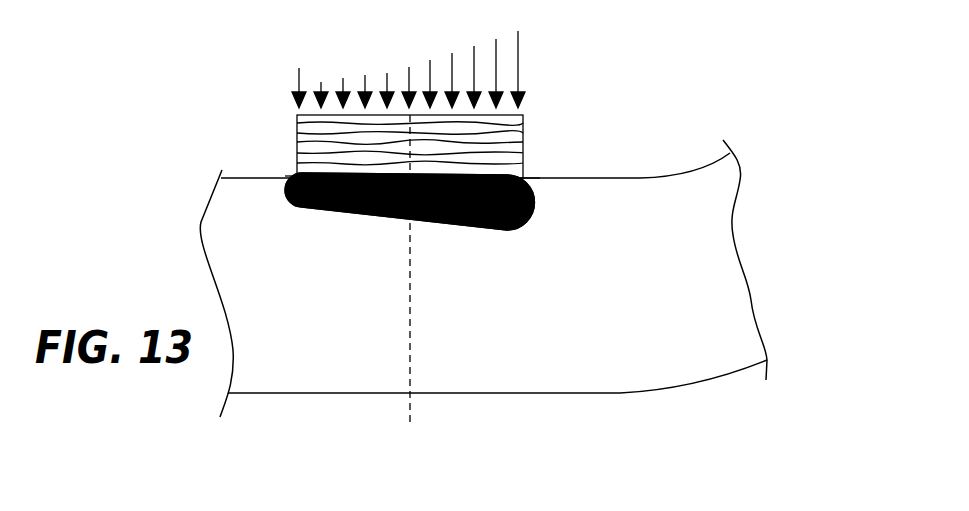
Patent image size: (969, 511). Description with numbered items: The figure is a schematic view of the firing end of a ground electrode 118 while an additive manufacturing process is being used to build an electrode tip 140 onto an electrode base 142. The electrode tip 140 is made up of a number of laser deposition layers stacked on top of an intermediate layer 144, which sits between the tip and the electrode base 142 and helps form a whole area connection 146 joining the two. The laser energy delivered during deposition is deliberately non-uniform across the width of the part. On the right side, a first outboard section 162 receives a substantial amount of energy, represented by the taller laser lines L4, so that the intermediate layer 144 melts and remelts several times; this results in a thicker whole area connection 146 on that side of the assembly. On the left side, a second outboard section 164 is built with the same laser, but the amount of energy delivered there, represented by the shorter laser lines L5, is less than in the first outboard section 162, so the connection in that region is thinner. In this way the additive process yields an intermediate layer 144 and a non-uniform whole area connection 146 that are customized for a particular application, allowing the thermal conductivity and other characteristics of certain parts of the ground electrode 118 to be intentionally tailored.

The ground electrode 118 is at (700, 270).
The electrode tip 140 is at (512, 143).
The electrode base 142 is at (370, 223).
The intermediate layer 144 is at (533, 212).
The whole area connection 146 is at (410, 201).
The first outboard section 162 is at (528, 180).
The second outboard section 164 is at (297, 173).
The laser lines L4 is at (518, 53).
The laser lines L5 is at (323, 83).